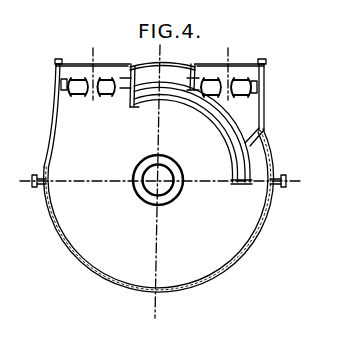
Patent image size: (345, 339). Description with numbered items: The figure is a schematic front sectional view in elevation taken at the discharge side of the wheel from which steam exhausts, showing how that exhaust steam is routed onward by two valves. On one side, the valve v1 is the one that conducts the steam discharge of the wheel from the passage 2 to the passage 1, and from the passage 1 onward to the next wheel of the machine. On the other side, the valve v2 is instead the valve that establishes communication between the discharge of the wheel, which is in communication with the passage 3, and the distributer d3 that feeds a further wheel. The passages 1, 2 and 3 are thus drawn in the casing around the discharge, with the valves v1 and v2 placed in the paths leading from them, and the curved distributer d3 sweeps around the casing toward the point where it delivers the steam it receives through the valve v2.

The passage 1 is at (62, 84).
The passage 2 is at (99, 102).
The passage 3 is at (259, 90).
The distributer d3 is at (197, 106).
The valve v1 is at (102, 74).
The valve v2 is at (237, 74).